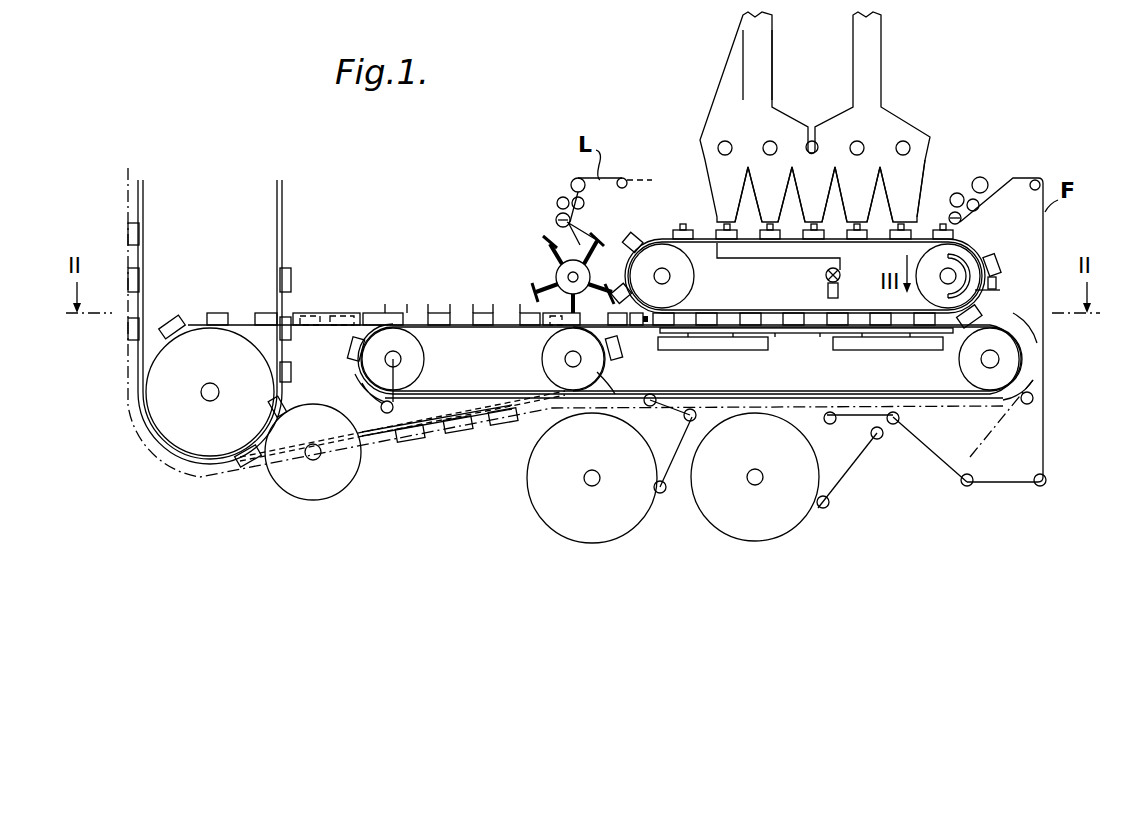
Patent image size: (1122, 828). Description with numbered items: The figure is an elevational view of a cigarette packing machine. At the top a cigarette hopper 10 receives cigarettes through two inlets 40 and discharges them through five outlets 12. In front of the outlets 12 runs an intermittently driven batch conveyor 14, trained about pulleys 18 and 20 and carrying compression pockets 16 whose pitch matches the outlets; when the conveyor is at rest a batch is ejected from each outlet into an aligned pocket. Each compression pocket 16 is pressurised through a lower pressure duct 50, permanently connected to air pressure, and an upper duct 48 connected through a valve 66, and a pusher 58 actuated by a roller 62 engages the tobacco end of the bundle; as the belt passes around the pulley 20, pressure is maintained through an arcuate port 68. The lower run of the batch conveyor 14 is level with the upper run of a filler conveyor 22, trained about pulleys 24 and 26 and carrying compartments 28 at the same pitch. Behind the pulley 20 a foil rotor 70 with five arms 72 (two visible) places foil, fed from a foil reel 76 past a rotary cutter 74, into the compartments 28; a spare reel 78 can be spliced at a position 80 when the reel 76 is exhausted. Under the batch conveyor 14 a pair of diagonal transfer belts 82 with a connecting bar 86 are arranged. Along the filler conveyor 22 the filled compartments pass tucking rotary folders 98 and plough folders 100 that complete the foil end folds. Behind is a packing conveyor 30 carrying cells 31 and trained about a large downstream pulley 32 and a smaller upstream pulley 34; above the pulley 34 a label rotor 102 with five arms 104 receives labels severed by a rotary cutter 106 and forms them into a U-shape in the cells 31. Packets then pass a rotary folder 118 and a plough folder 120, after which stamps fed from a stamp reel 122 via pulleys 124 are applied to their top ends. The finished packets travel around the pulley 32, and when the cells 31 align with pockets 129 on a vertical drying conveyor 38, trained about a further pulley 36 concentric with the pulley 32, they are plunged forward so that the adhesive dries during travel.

The cigarette hopper 10 is at (912, 115).
The outlets 12 is at (853, 203).
The batch conveyor 14 is at (673, 232).
The compression pockets 16 is at (637, 236).
The pulley 18 is at (680, 280).
The pulley 20 is at (962, 254).
The wrapper or filler conveyor 22 is at (958, 400).
The pulley 24 is at (415, 368).
The pulley 26 is at (968, 368).
The compartments 28 is at (1033, 362).
The packing conveyor 30 is at (385, 445).
The compartments or cells 31 is at (473, 312).
The large downstream pulley 32 is at (207, 425).
The smaller upstream pulley 34 is at (545, 368).
The further pulley 36 is at (193, 440).
The drying conveyor 38 is at (277, 218).
The inlets 40 is at (853, 35).
The upper duct 48 is at (776, 258).
The lower pressure duct 50 is at (907, 302).
The pusher 58 is at (918, 228).
The roller 62 is at (903, 225).
The valve 66 is at (826, 276).
The arcuate port 68 is at (975, 291).
The foil rotor 70 is at (1012, 280).
The arms 72 is at (968, 225).
The rotary cutter 74 is at (957, 193).
The foil reel 76 is at (755, 477).
The spare reel 78 is at (592, 478).
The splice position 80 is at (952, 468).
The diagonal transfer belts 82 is at (710, 347).
The bar 86 is at (780, 336).
The tucking rotary folders 98 is at (639, 335).
The plough folders 100 is at (548, 325).
The label rotor 102 is at (553, 278).
The arms 104 is at (550, 255).
The rotary cutter 106 is at (560, 212).
The rotary folder 118 is at (378, 313).
The plough folder 120 is at (326, 313).
The stamp reel 122 is at (312, 490).
The pulleys 124 is at (378, 406).
The pockets 129 is at (135, 230).